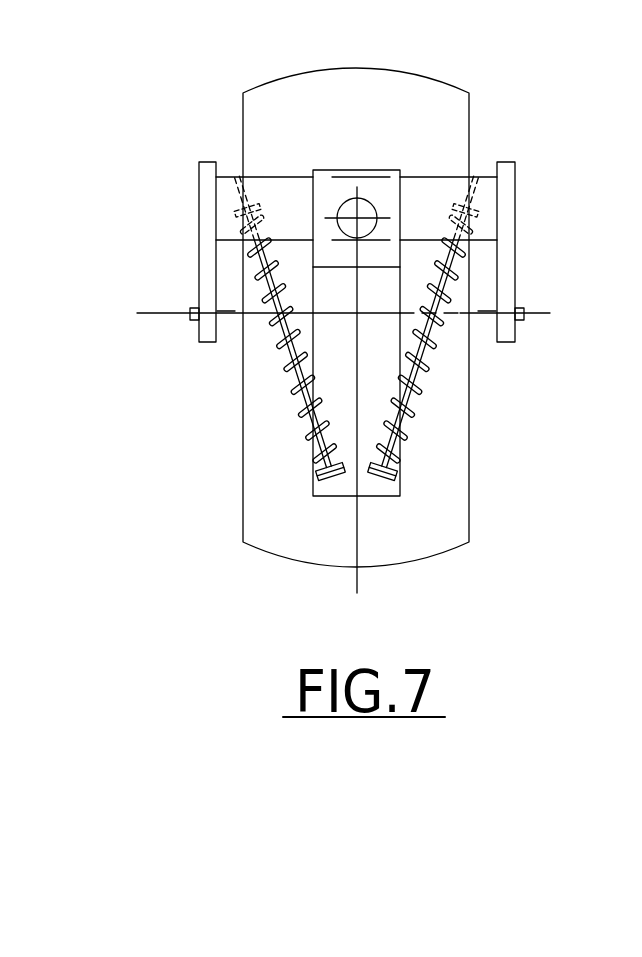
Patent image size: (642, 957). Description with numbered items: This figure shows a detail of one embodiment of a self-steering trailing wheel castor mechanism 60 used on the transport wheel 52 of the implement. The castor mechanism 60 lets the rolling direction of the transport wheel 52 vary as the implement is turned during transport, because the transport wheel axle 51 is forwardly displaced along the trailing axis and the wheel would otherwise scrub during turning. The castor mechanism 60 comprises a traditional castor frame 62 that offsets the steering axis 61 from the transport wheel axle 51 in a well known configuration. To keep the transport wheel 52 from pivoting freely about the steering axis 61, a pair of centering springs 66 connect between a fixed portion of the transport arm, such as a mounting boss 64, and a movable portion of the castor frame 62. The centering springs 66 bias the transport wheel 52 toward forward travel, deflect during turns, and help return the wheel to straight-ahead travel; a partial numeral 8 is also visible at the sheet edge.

The transport wheel 52 is at (407, 75).
The steering axis 61 is at (362, 213).
The castor frame 62 is at (486, 222).
The castor mechanism 60 is at (178, 250).
The transport wheel axle 51 is at (163, 313).
The centering springs 66 is at (300, 373).
The mounting boss 64 is at (387, 486).
The partial reference numeral 8 is at (634, 324).